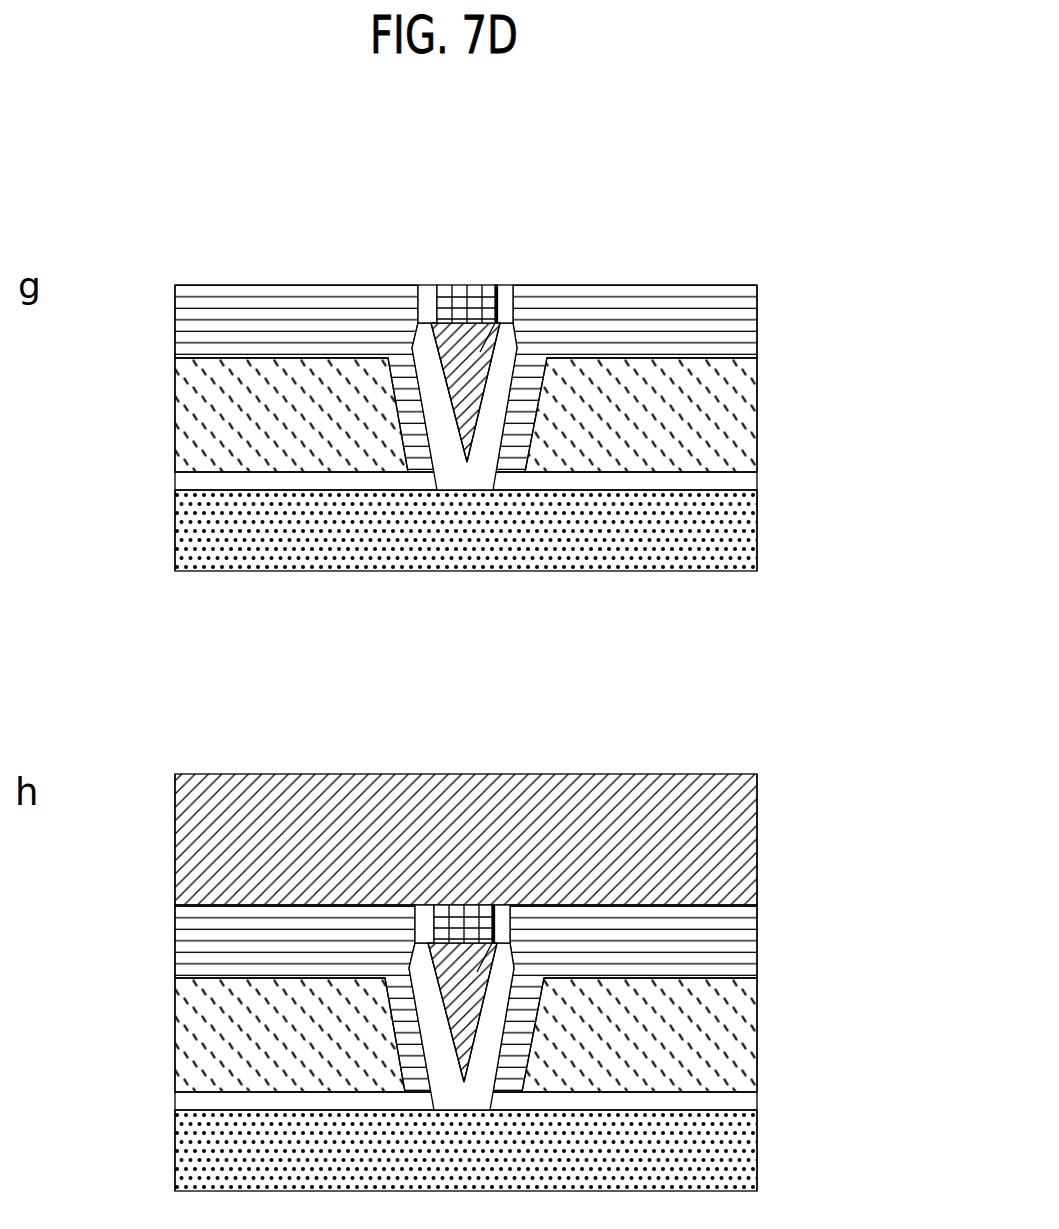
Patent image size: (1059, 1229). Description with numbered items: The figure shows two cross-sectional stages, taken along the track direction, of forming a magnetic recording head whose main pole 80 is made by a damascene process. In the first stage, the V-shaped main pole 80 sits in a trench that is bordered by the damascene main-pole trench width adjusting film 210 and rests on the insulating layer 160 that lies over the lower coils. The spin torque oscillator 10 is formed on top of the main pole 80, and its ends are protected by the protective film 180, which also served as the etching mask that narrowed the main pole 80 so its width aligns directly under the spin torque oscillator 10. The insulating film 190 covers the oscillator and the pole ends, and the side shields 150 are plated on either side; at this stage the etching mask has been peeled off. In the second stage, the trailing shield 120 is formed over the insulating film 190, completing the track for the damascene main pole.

The spin torque oscillator 10 is at (471, 306).
The main pole 80 is at (481, 350).
The trailing shield 120 is at (736, 822).
The side shields 150 is at (187, 393).
The insulating layer 160 is at (185, 554).
The protective film/second etching mask 180 is at (427, 298).
The insulating film 190 is at (702, 300).
The damascene main-pole trench width adjusting film 210 is at (517, 347).